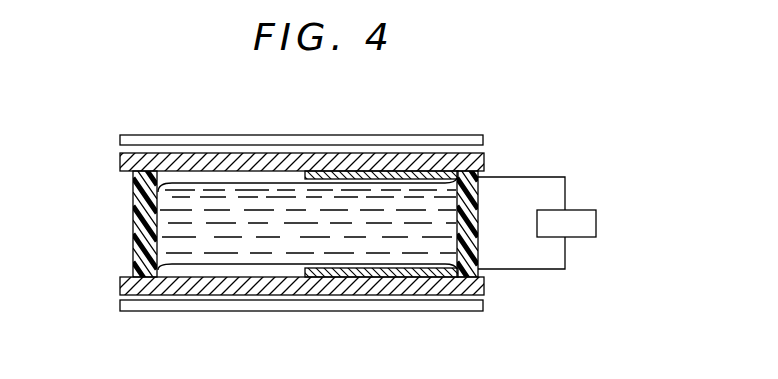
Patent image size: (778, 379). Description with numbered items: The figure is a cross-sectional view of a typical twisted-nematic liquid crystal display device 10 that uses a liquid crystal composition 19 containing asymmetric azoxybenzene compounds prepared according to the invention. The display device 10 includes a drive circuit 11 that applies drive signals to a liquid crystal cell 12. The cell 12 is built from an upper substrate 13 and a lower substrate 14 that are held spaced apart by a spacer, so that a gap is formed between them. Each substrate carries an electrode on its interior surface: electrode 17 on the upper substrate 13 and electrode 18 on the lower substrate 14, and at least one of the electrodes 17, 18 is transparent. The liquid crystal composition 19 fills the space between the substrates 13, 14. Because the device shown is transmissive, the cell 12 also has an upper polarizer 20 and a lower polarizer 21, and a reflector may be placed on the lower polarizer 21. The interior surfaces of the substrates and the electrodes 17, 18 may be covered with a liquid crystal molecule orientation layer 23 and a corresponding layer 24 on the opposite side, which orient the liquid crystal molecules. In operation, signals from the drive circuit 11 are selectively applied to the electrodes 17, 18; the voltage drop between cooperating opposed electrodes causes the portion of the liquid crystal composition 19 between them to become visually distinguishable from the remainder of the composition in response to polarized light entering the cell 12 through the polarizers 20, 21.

The liquid crystal display device 10 is at (503, 141).
The drive circuit 11 is at (588, 222).
The liquid crystal cell 12 is at (118, 240).
The upper substrate 13 is at (235, 168).
The lower substrate 14 is at (183, 289).
The electrode 17 is at (393, 176).
The electrode 18 is at (417, 273).
The liquid crystal composition 19 is at (441, 228).
The upper polarizer 20 is at (307, 137).
The lower polarizer 21 is at (253, 308).
The liquid crystal molecule orientation layer 23 is at (188, 178).
The lower film layer 24 is at (287, 271).